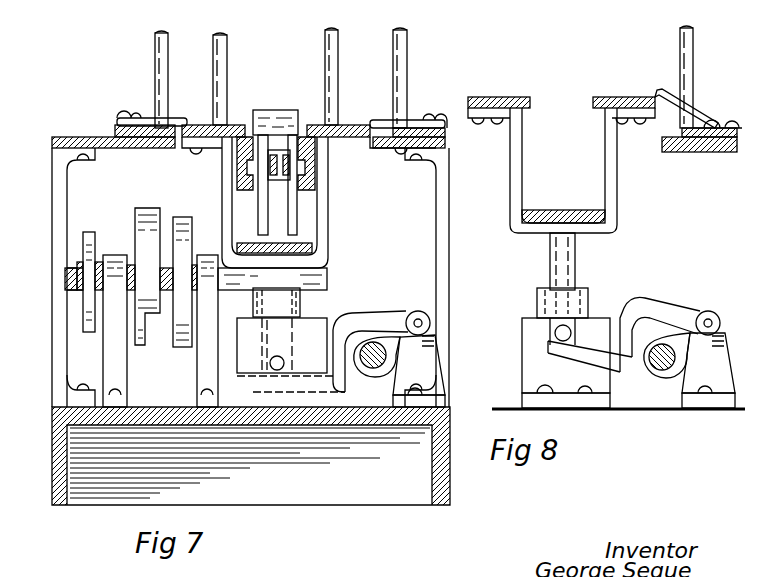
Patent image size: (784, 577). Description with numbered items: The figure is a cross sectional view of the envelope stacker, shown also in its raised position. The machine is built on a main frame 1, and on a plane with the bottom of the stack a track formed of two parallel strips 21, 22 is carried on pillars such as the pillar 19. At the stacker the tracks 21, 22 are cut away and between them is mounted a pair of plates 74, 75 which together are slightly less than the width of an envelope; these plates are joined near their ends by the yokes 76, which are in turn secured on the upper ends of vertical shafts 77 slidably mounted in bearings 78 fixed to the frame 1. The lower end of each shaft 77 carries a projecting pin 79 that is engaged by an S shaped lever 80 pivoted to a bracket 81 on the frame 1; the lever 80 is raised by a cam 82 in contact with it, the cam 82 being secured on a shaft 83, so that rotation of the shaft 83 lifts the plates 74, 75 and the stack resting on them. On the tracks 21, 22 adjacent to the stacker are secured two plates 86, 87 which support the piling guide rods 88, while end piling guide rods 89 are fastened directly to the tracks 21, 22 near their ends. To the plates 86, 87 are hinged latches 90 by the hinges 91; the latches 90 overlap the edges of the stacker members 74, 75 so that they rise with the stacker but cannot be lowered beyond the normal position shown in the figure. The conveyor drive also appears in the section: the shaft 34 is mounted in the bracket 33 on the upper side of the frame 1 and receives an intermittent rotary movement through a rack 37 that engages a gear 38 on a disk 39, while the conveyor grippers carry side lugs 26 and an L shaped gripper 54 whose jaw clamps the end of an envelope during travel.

In FIG. 7, the main frame 1 is at (62, 441).
In FIG. 7, the pillar 19 is at (57, 201).
In FIG. 7, the track strip 21 is at (68, 141).
In FIG. 8, the track strip 22 is at (722, 152).
In FIG. 7, the side lug 26 is at (302, 166).
In FIG. 7, the bracket 33 is at (205, 375).
In FIG. 7, the shaft 34 is at (68, 285).
In FIG. 7, the rack 37 is at (165, 228).
In FIG. 7, the gear 38 is at (188, 214).
In FIG. 7, the disk 39 is at (83, 243).
In FIG. 7, the L shaped gripper 54 is at (277, 110).
In FIG. 8, the stacker plate 74 is at (488, 96).
In FIG. 8, the stacker plate 75 is at (613, 96).
In FIG. 7, the yoke 76 is at (322, 190).
In FIG. 8, the yoke 76 is at (607, 150).
In FIG. 8, the vertical shaft 77 is at (558, 253).
In FIG. 7, the bearing 78 is at (293, 303).
In FIG. 8, the bearing 78 is at (537, 298).
In FIG. 7, the pin 79 is at (284, 363).
In FIG. 8, the pin 79 is at (556, 334).
In FIG. 7, the S shaped lever 80 is at (386, 315).
In FIG. 8, the S shaped lever 80 is at (652, 312).
In FIG. 7, the bracket 81 is at (419, 371).
In FIG. 8, the bracket 81 is at (708, 370).
In FIG. 7, the cam 82 is at (405, 343).
In FIG. 8, the cam 82 is at (660, 354).
In FIG. 7, the shaft 83 is at (372, 361).
In FIG. 8, the shaft 83 is at (670, 365).
In FIG. 7, the plate 86 is at (117, 128).
In FIG. 7, the plate 87 is at (446, 133).
In FIG. 8, the plate 87 is at (450, 138).
In FIG. 7, the piling guide rod 88 is at (155, 46).
In FIG. 8, the piling guide rod 88 is at (694, 40).
In FIG. 7, the end piling guide rod 89 is at (325, 43).
In FIG. 7, the latch 90 is at (182, 121).
In FIG. 8, the latch 90 is at (700, 122).
In FIG. 7, the hinge 91 is at (142, 121).
In FIG. 8, the hinge 91 is at (726, 119).